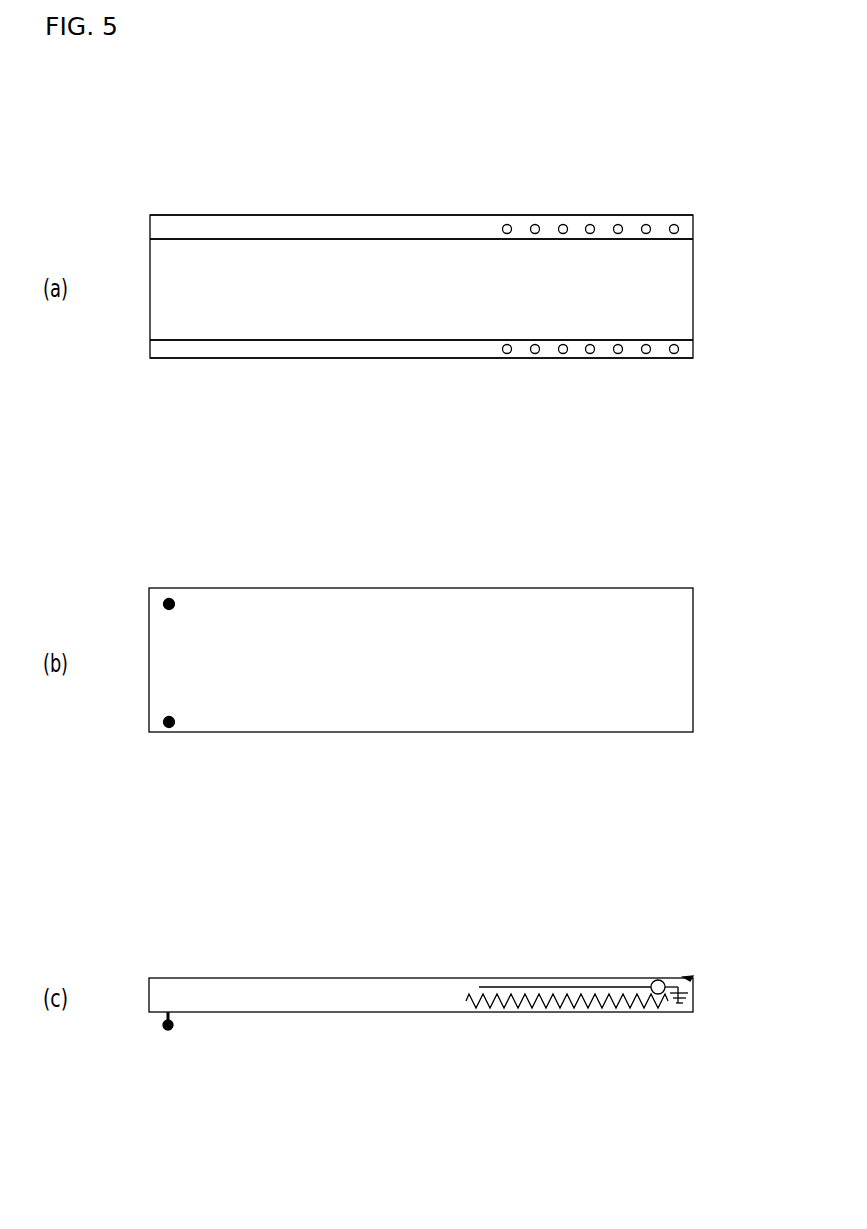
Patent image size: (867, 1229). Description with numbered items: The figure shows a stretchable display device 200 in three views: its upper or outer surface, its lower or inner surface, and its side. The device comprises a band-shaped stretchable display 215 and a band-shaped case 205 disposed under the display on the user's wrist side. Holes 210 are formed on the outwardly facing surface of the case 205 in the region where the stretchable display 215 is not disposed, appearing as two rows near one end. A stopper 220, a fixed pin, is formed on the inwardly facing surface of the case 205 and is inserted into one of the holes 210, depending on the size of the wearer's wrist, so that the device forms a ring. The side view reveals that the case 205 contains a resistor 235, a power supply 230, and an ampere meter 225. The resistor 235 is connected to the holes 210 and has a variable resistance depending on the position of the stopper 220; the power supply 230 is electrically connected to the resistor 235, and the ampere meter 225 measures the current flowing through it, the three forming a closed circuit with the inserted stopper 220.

The stretchable display device 200 is at (421, 190).
The case 205 is at (590, 214).
The holes 210 is at (507, 224).
The stretchable display 215 is at (693, 262).
The stopper 220 is at (171, 598).
The ampere meter 225 is at (657, 980).
The power supply 230 is at (692, 978).
The resistor 235 is at (617, 1012).